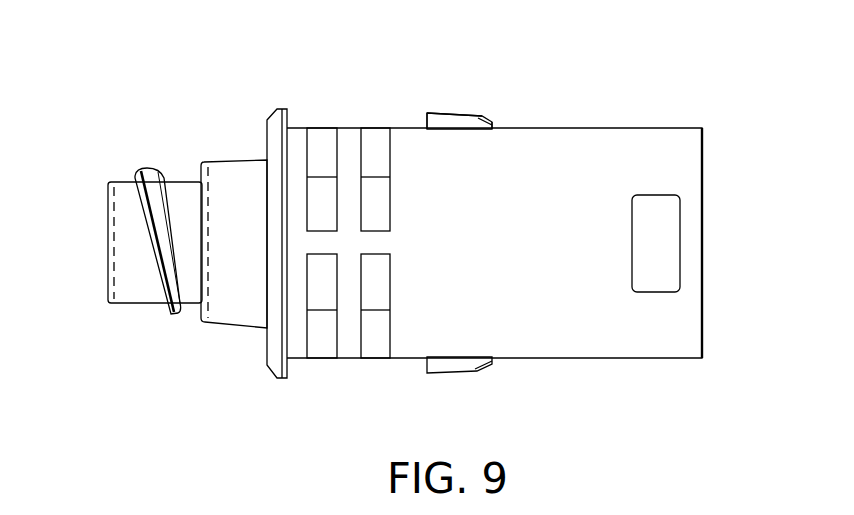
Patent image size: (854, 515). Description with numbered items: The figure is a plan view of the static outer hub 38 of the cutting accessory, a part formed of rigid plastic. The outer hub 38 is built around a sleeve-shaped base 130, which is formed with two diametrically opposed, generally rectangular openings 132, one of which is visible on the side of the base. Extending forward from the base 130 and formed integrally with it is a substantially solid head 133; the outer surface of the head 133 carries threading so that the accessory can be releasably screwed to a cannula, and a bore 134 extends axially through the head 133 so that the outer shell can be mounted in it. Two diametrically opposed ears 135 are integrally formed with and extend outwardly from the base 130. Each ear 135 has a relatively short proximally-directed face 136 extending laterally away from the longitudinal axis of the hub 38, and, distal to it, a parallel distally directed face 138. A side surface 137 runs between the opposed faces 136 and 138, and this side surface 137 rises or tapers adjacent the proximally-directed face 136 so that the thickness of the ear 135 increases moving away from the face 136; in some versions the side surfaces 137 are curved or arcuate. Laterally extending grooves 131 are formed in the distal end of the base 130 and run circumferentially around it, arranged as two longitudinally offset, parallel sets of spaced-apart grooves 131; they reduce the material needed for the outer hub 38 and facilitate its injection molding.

The static outer hub 38 is at (218, 120).
The sleeve-shaped base 130 is at (655, 172).
The grooves 131 is at (323, 347).
The openings 132 is at (662, 227).
The head 133 is at (220, 315).
The bore 134 is at (107, 284).
The ears 135 is at (440, 113).
The proximally-directed face 136 is at (493, 128).
The side surface 137 is at (474, 115).
The distally directed face 138 is at (427, 118).